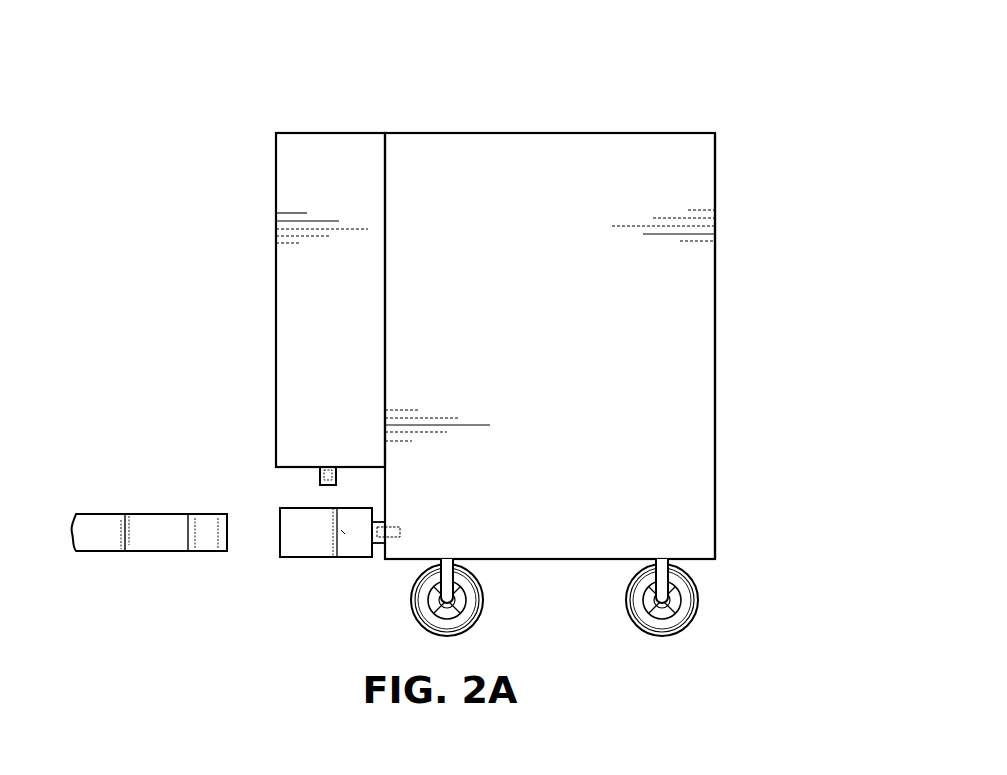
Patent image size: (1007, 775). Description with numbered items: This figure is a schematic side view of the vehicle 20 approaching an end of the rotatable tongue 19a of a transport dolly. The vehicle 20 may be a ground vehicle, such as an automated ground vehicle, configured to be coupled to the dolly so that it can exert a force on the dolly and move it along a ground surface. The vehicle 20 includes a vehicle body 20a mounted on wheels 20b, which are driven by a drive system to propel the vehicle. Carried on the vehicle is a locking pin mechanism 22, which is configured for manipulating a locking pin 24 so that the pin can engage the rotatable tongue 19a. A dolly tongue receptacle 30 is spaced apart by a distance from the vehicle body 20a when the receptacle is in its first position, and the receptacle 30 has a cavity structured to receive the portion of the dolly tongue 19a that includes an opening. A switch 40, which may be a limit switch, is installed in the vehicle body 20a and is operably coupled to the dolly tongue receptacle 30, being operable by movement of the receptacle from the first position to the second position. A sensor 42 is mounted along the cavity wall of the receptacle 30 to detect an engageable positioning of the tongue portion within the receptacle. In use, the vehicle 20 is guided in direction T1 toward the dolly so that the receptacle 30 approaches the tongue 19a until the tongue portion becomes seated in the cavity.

The rotatable tongue 19a is at (150, 541).
The vehicle 20 is at (722, 236).
The vehicle body 20a is at (687, 186).
The wheels 20b is at (483, 600).
The locking pin mechanism 22 is at (325, 158).
The locking pin 24 is at (317, 471).
The dolly tongue receptacle 30 is at (303, 543).
The switch 40 is at (400, 532).
The sensor 42 is at (344, 533).
The direction T1 is at (270, 532).